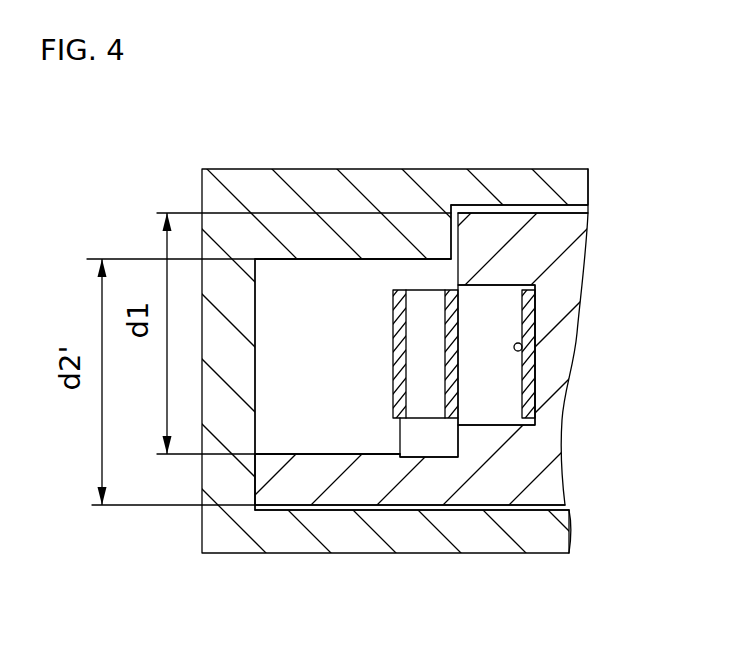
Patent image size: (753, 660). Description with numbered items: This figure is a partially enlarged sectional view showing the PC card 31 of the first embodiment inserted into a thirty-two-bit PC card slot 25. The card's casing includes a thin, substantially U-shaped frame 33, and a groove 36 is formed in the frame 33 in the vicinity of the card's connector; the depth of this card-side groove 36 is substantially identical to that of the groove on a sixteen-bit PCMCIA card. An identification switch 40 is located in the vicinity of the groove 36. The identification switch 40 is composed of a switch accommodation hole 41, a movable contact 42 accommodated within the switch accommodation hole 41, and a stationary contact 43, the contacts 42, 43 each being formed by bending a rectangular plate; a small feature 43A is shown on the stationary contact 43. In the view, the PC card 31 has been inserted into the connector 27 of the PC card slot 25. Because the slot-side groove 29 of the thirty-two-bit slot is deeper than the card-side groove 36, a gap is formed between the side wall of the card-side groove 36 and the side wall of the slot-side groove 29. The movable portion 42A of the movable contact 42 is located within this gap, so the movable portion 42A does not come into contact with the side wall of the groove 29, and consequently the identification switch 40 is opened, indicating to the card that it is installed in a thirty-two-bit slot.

The 32-bit PC card slot 25 is at (378, 130).
The connector 27 is at (310, 185).
The slot-side groove 29 is at (307, 263).
The PC card 31 is at (606, 230).
The frame 33 is at (548, 487).
The groove 36 is at (340, 454).
The identification switch 40 is at (511, 264).
The switch accommodation hole 41 is at (490, 425).
The movable contact 42 is at (428, 313).
The movable portion 42A is at (400, 425).
The stationary contact 43 is at (537, 300).
The hole 43A is at (522, 347).